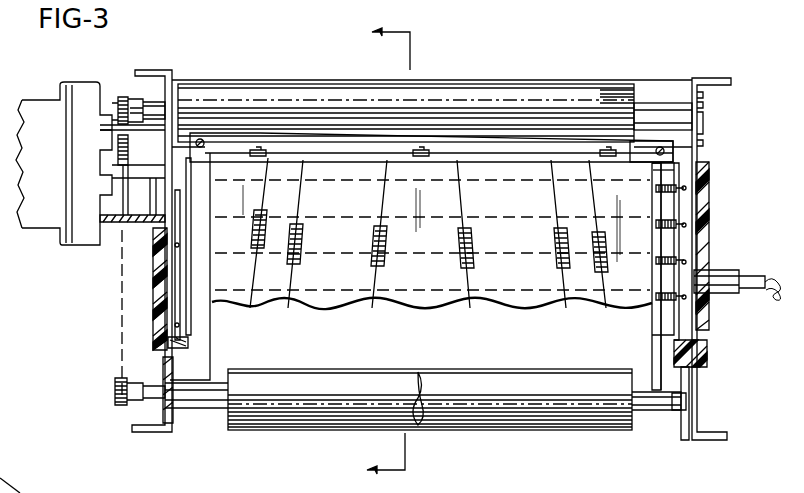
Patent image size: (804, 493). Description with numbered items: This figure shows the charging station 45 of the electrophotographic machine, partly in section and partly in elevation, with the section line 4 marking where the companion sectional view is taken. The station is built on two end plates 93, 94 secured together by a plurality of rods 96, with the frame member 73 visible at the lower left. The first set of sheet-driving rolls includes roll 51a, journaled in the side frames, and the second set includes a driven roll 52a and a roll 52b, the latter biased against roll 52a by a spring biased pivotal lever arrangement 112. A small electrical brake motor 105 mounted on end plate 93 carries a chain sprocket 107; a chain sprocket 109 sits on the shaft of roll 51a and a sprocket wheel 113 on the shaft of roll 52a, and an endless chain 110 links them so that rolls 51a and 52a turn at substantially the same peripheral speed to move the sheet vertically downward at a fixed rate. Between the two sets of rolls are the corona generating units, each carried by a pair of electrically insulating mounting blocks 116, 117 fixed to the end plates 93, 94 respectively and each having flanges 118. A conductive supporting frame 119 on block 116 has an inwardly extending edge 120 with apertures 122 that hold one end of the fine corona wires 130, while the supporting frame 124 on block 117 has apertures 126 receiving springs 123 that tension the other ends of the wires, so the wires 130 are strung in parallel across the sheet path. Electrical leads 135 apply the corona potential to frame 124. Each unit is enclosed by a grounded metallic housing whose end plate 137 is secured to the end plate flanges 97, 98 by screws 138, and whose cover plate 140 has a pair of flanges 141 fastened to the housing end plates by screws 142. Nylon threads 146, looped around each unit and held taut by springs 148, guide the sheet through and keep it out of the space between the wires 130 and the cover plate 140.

The section line 4- 4 is at (388, 250).
The charging station 45 is at (519, 74).
The driven roll of first set 51a is at (305, 88).
The driven roll of second set 52a is at (300, 418).
The roll of second set 52b is at (500, 418).
The frame member 73 is at (47, 485).
The end plate 93 is at (150, 71).
The end plate 94 is at (718, 79).
The rods 96 is at (197, 80).
The end plate flange 97 is at (667, 312).
The end plate flange 98 is at (173, 372).
The electrical brake motor 105 is at (80, 92).
The chain sprocket 107 is at (113, 192).
The chain sprocket 109 is at (122, 97).
The endless chain 110 is at (125, 320).
The spring biased pivotal lever arrangement 112 is at (683, 401).
The sprocket wheel 113 is at (118, 399).
The electrically insulating mounting block 116 is at (158, 330).
The electrically insulating mounting block 117 is at (693, 338).
The flanges 118 is at (197, 338).
The conductive supporting frame 119 is at (173, 271).
The inwardly extending edge 120 is at (182, 238).
The apertures 122 is at (177, 250).
The springs 123 is at (668, 216).
The supporting frame 124 is at (685, 232).
The apertures 126 is at (692, 266).
The corona wires 130 is at (360, 258).
The electrical leads 135 is at (750, 290).
The end plate of corona housing 137 is at (490, 160).
The screws 138 is at (664, 151).
The cover plate 140 is at (415, 303).
The flanges 141 is at (433, 165).
The screws 142 is at (258, 148).
The nylon threads 146 is at (290, 304).
The springs 148 is at (290, 262).